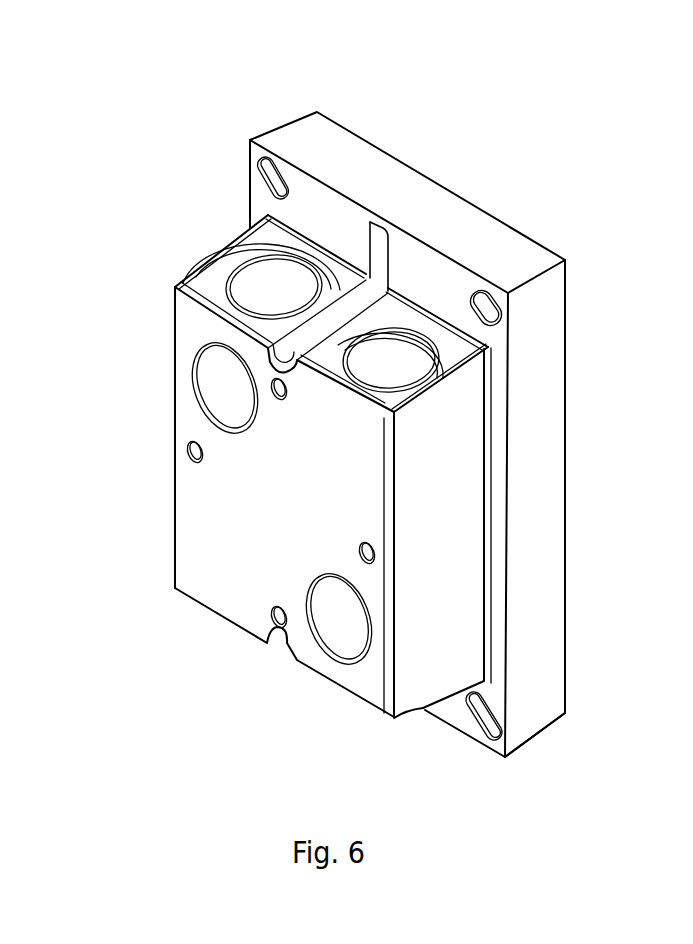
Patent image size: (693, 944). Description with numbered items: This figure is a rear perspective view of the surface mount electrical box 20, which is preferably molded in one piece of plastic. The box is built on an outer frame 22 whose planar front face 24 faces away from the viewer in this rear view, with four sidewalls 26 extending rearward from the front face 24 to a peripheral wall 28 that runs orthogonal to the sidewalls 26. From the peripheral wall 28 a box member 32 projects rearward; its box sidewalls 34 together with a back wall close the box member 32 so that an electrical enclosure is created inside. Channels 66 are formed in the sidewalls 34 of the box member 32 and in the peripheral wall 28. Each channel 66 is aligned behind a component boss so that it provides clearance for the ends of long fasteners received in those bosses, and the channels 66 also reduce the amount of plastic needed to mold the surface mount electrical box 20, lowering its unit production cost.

The surface mount electrical box 20 is at (172, 143).
The outer frame 22 is at (532, 740).
The front face 24 is at (462, 197).
The sidewalls 26 is at (408, 206).
The peripheral wall 28 is at (441, 293).
The box member 32 is at (423, 708).
The box sidewalls 34 is at (462, 345).
The channels 66 is at (305, 333).